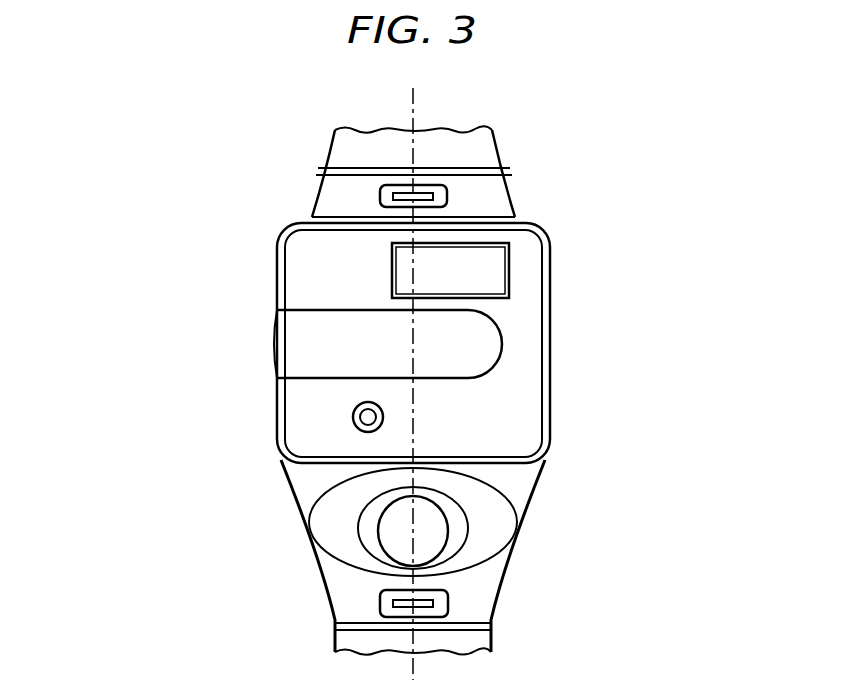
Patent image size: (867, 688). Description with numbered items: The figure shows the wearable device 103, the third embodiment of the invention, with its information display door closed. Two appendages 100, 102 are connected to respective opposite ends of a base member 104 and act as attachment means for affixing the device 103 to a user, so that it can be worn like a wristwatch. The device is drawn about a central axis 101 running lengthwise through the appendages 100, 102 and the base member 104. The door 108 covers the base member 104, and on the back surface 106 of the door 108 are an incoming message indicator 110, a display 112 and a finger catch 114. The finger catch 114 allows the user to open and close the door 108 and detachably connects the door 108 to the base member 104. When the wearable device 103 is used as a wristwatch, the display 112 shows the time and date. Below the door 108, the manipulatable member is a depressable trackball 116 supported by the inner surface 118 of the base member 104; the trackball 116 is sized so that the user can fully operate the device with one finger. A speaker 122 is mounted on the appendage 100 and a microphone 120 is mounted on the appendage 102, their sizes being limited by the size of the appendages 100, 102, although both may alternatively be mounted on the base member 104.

The appendage 100 is at (495, 155).
The center axis 101 is at (413, 112).
The appendage 102 is at (490, 636).
The device 103 is at (158, 242).
The base member 104 is at (533, 508).
The back surface 106 is at (523, 378).
The door 108 is at (277, 288).
The incoming message indicator 110 is at (353, 417).
The display 112 is at (509, 266).
The finger catch 114 is at (297, 338).
The depressable trackball 116 is at (450, 532).
The inner surface 118 is at (527, 478).
The microphone 120 is at (380, 598).
The speaker 122 is at (380, 196).